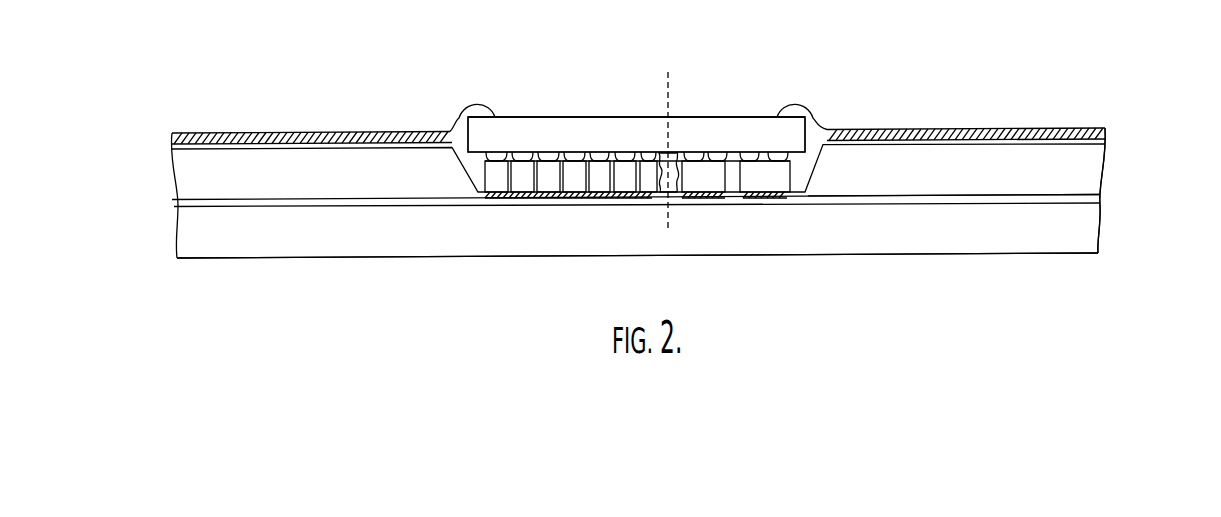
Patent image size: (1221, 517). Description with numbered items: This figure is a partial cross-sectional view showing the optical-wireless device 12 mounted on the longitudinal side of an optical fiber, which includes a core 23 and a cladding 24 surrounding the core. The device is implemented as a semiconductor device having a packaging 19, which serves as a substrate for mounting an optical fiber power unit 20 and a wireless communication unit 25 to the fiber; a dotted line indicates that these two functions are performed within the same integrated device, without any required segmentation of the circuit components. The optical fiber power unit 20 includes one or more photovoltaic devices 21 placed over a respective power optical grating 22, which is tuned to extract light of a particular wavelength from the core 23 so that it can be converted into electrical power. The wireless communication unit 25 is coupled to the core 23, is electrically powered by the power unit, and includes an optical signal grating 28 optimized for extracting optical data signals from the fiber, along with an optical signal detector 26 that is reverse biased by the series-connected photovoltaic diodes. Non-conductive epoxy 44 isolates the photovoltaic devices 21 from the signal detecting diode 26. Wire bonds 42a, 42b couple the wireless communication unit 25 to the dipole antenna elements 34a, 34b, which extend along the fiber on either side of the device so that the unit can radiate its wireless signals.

The optical-wireless device 12 is at (765, 58).
The packaging 19 is at (522, 117).
The optical fiber power unit 20 is at (580, 103).
The wireless communication unit 25 is at (715, 108).
The photovoltaic device 21 is at (490, 180).
The power optical grating 22 is at (570, 198).
The non-conductive epoxy 44 is at (667, 185).
The optical signal grating 28 is at (767, 198).
The optical signal detector 26 is at (787, 177).
The core 23 is at (1030, 197).
The cladding 24 is at (1090, 173).
The dipole antenna element 34a is at (293, 131).
The dipole antenna element 34b is at (907, 128).
The wire bond 42a is at (457, 117).
The wire bond 42b is at (815, 117).